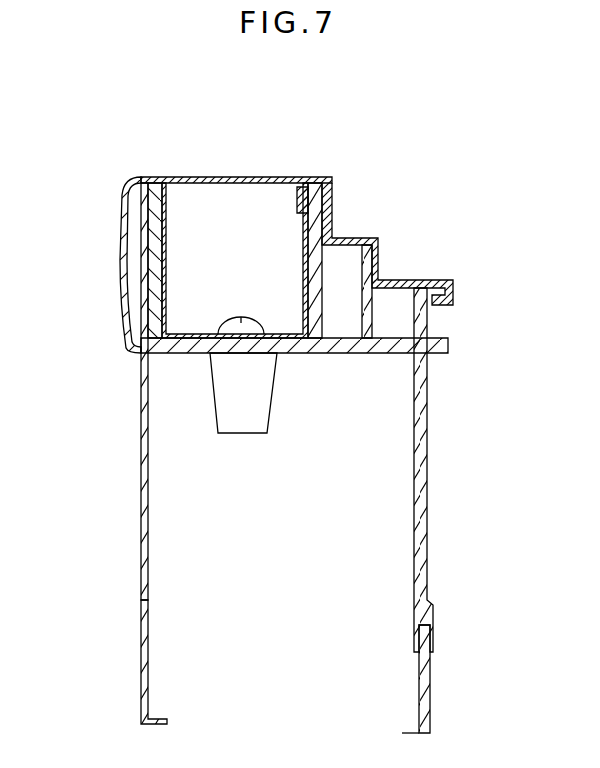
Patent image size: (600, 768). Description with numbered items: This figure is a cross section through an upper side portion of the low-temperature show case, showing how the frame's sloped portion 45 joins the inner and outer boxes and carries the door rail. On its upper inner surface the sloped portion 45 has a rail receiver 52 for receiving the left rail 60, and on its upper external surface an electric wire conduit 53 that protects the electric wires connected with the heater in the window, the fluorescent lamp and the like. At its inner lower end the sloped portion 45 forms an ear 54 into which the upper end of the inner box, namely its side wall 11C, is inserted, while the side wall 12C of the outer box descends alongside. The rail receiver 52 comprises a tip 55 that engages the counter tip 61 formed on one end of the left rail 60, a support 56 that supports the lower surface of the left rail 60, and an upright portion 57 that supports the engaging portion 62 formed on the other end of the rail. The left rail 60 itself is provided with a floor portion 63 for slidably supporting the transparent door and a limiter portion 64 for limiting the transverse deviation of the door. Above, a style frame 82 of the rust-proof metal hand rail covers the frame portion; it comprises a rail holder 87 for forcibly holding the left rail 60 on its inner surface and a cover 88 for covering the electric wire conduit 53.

The style frame 82 is at (180, 176).
The cover 88 is at (216, 177).
The engaging portion 62 is at (283, 178).
The upright portion 57 is at (317, 193).
The rail holder 87 is at (333, 185).
The left rail 60 is at (345, 235).
The support 56 is at (366, 270).
The limiter portion 64 is at (380, 258).
The floor portion 63 is at (410, 282).
The counter tip 61 is at (453, 291).
The tip 55 is at (447, 303).
The electric wire conduit 53 is at (163, 357).
The sloped portion 45 is at (313, 354).
The rail receiver 52 is at (382, 353).
The ear 54 is at (420, 503).
The side wall of outer box 12C is at (140, 652).
The side wall of inner box 11C is at (430, 695).